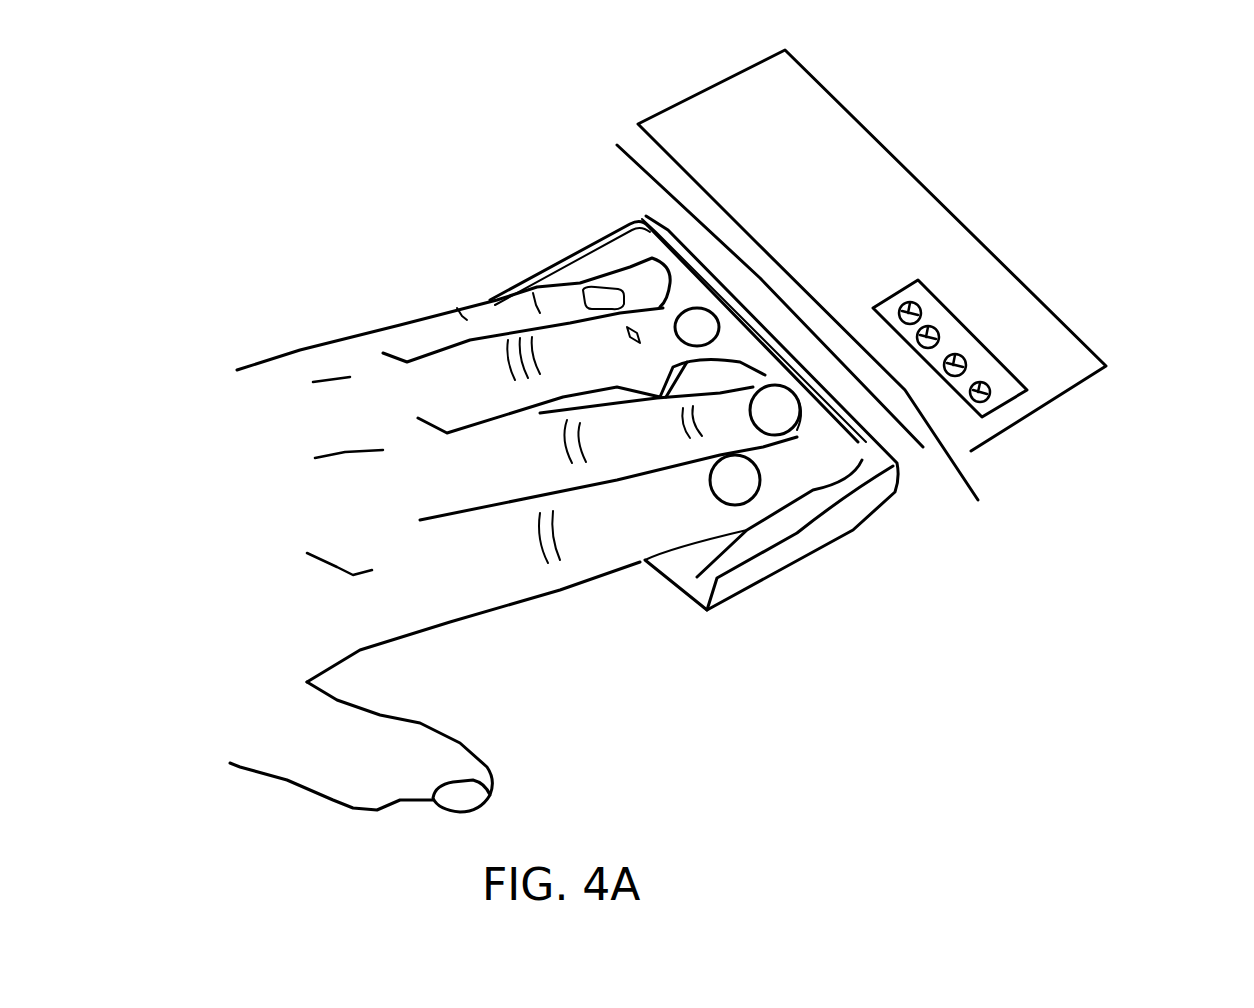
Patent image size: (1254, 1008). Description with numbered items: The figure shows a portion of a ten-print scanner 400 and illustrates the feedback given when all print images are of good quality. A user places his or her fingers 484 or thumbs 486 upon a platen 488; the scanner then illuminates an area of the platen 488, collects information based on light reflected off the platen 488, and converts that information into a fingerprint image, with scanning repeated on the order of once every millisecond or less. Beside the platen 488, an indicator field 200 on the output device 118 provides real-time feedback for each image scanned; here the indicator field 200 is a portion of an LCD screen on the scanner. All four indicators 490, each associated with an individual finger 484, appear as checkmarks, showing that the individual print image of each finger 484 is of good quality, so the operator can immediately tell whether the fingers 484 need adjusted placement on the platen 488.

The ten-print scanner 400 is at (1122, 48).
The output device 118 is at (880, 146).
The indicator field 200 is at (963, 327).
The indicators 490 is at (988, 386).
The platen 488 is at (797, 490).
The fingers 484 is at (560, 573).
The thumbs 486 is at (493, 780).